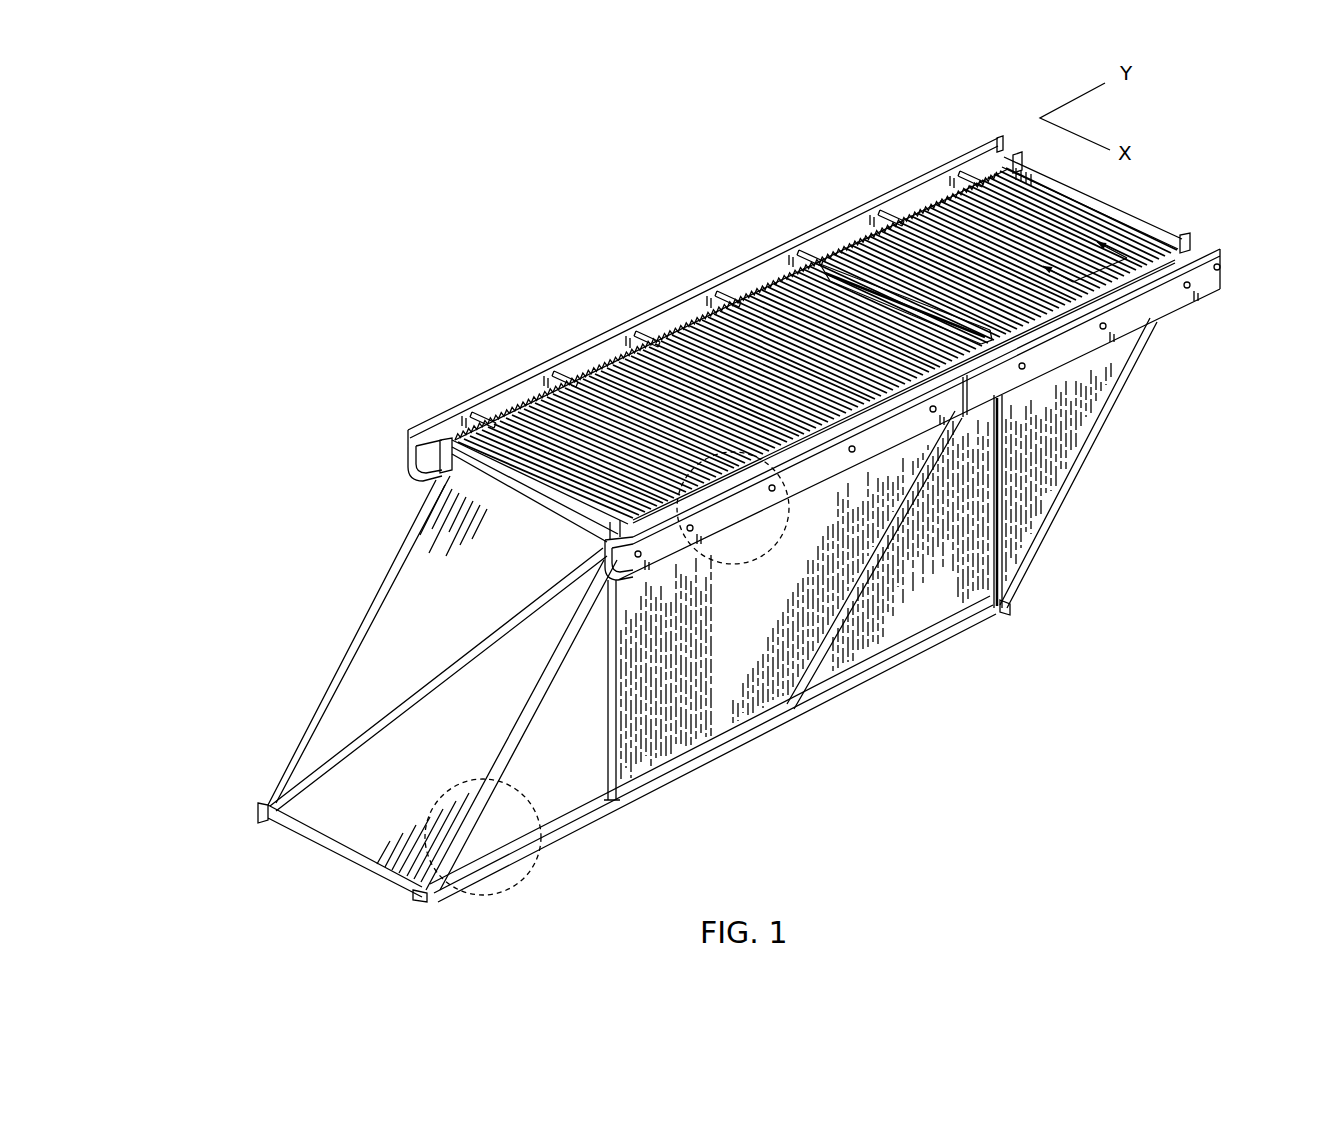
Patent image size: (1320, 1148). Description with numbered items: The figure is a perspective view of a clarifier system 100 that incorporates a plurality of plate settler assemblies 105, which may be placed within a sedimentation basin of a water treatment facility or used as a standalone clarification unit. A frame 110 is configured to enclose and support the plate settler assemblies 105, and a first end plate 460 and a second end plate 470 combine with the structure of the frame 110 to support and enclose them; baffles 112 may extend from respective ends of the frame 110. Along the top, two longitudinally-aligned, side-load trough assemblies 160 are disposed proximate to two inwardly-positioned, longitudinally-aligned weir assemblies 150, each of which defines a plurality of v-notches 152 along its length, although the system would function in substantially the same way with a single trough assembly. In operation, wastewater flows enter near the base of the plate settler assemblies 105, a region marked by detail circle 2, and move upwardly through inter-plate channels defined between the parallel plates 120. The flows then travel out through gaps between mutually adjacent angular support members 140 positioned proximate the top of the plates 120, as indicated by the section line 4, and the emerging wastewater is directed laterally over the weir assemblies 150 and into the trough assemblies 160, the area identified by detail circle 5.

The clarifier system 100 is at (588, 308).
The plate settler assemblies 105 is at (708, 411).
The frame 110 is at (1000, 520).
The baffles 112 is at (547, 496).
The plates 120 is at (718, 700).
The angular support members 140 is at (770, 333).
The weir assemblies 150 is at (540, 388).
The v-notches 152 is at (513, 401).
The trough assemblies 160 is at (428, 430).
The first end plate 460 is at (1085, 448).
The second end plate 470 is at (393, 823).
The detail circle 2 is at (545, 848).
The section line 4 is at (1072, 247).
The detail circle 5 is at (785, 496).